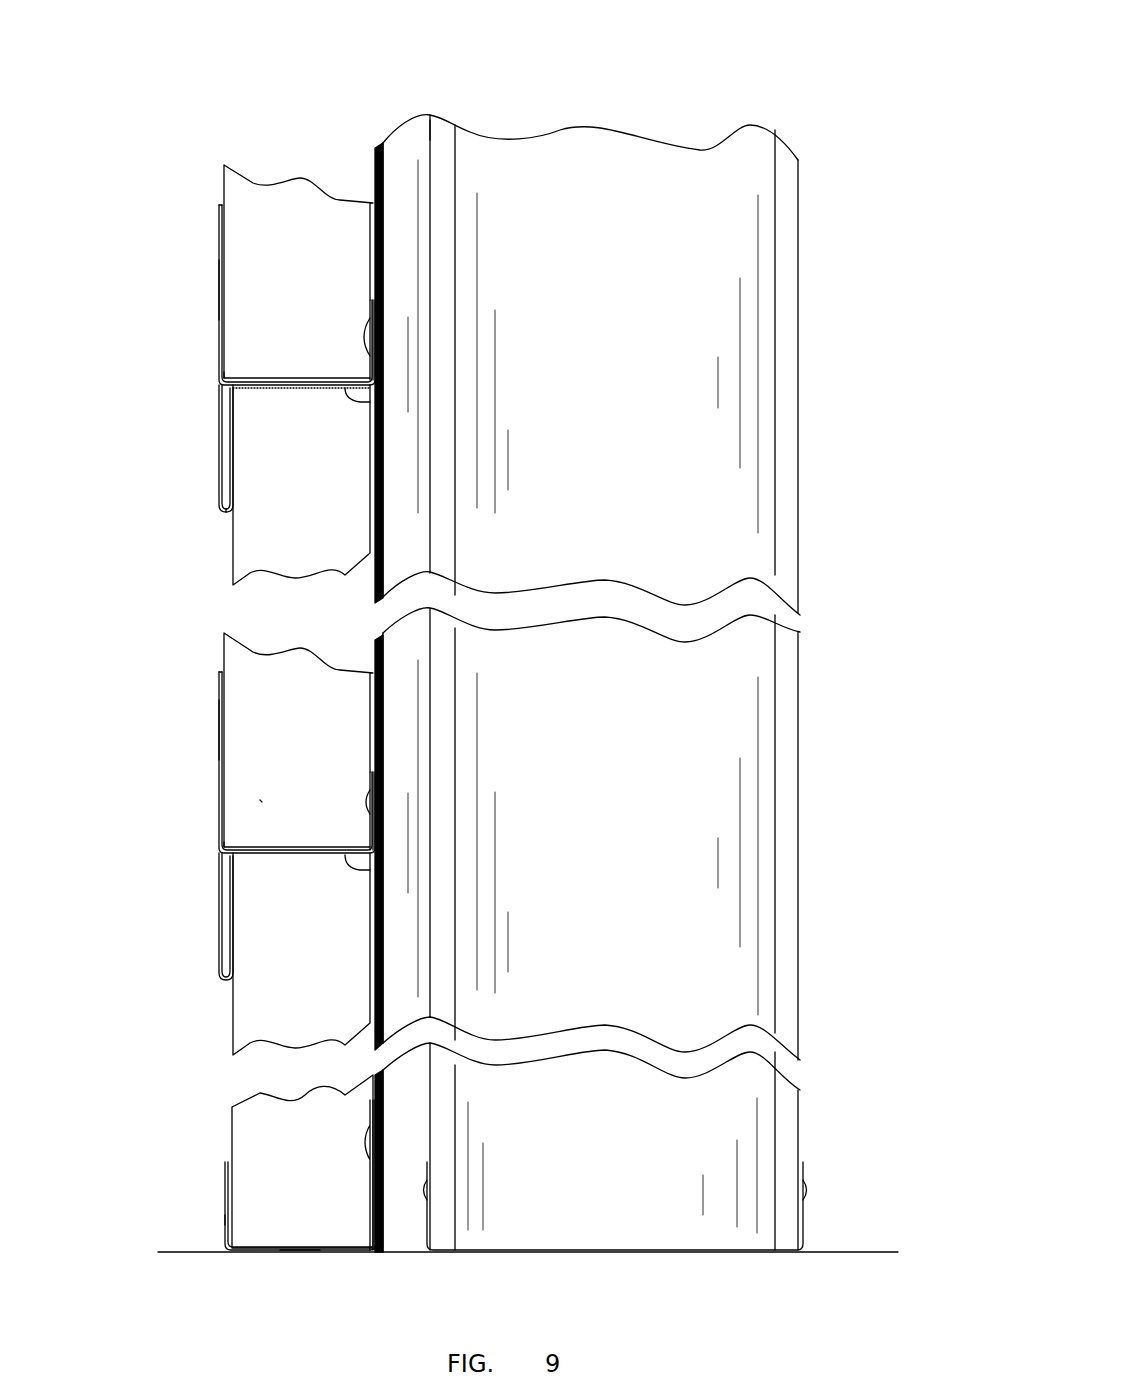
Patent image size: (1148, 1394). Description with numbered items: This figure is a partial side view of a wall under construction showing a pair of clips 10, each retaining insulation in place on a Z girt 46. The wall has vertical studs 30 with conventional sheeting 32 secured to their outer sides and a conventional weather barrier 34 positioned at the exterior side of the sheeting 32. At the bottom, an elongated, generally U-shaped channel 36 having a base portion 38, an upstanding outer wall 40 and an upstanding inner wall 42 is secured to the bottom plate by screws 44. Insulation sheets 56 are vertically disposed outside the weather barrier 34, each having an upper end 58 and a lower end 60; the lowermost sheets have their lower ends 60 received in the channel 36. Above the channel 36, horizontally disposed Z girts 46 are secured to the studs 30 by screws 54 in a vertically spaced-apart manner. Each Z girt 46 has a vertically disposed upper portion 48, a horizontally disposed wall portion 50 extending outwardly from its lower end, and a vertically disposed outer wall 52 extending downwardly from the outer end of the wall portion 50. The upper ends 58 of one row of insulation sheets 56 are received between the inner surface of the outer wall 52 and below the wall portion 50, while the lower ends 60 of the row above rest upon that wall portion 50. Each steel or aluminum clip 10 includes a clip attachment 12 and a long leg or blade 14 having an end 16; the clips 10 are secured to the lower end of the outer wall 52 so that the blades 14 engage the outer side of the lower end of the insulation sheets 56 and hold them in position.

The clip 10 is at (197, 348).
The clip attachment 12 is at (240, 463).
The leg 14 is at (218, 288).
The end 16 is at (219, 203).
The studs 30 is at (697, 955).
The sheeting 32 is at (300, 373).
The weather barrier 34 is at (418, 213).
The channel 36 is at (220, 1186).
The base portion 38 is at (300, 1252).
The outer wall 40 is at (372, 1200).
The inner wall 42 is at (225, 1214).
The screws 44 is at (370, 1143).
The Z girt 46 is at (382, 182).
The upper portion 48 is at (372, 362).
The wall portion 50 is at (345, 388).
The outer wall 52 is at (216, 440).
The screws 54 is at (372, 330).
The insulation sheets 56 is at (343, 501).
The upper end 58 is at (305, 410).
The lower end 60 is at (278, 835).